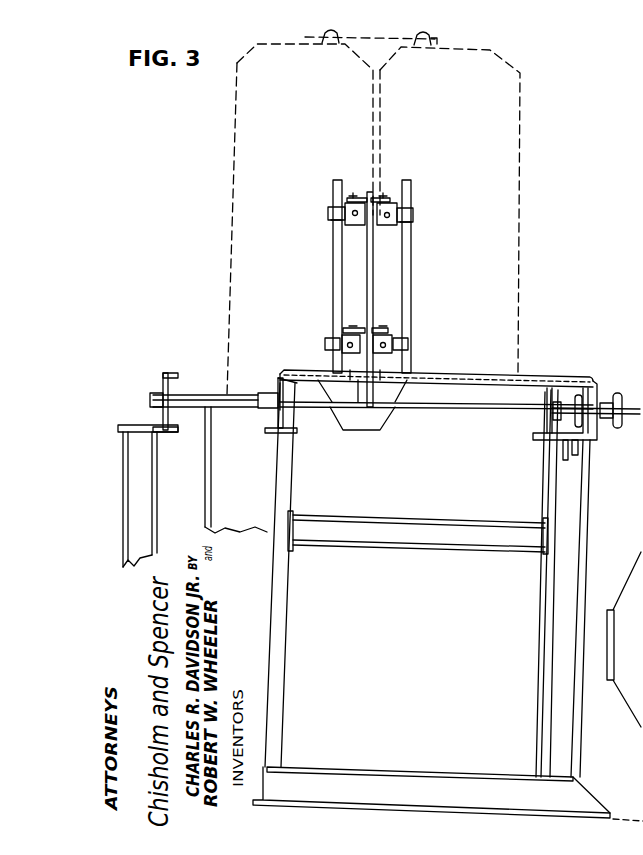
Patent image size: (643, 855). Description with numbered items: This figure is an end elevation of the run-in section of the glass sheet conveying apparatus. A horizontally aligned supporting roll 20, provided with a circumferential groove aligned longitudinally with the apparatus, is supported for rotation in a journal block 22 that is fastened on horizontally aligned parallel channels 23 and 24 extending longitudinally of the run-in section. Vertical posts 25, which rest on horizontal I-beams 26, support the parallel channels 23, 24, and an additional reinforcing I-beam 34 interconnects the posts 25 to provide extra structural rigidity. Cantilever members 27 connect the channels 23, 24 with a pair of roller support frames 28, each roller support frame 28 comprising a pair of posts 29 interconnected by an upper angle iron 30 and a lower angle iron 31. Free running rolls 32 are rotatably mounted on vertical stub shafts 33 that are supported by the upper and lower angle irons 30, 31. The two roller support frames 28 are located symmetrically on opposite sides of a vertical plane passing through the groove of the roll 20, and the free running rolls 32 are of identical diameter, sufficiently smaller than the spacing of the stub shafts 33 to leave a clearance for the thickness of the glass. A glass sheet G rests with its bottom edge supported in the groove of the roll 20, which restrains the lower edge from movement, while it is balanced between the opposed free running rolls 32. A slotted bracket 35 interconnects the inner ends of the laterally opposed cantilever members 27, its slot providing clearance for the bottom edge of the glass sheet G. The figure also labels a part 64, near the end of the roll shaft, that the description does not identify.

The supporting roll 20 is at (258, 404).
The journal block 22 is at (268, 408).
The channel 23 is at (279, 379).
The channel 24 is at (557, 386).
The vertical post 25 is at (292, 470).
The horizontal I-beam 26 is at (428, 778).
The cantilever member 27 is at (300, 371).
The roller support frame 28 is at (323, 216).
The post 29 is at (367, 268).
The upper angle iron 30 is at (380, 223).
The lower angle iron 31 is at (340, 336).
The free running roll 32 is at (377, 197).
The vertical stub shaft 33 is at (350, 200).
The I-beam 34 is at (420, 517).
The slotted bracket 35 is at (370, 425).
The hand wheel 64 is at (580, 422).
The glass sheet G is at (372, 288).